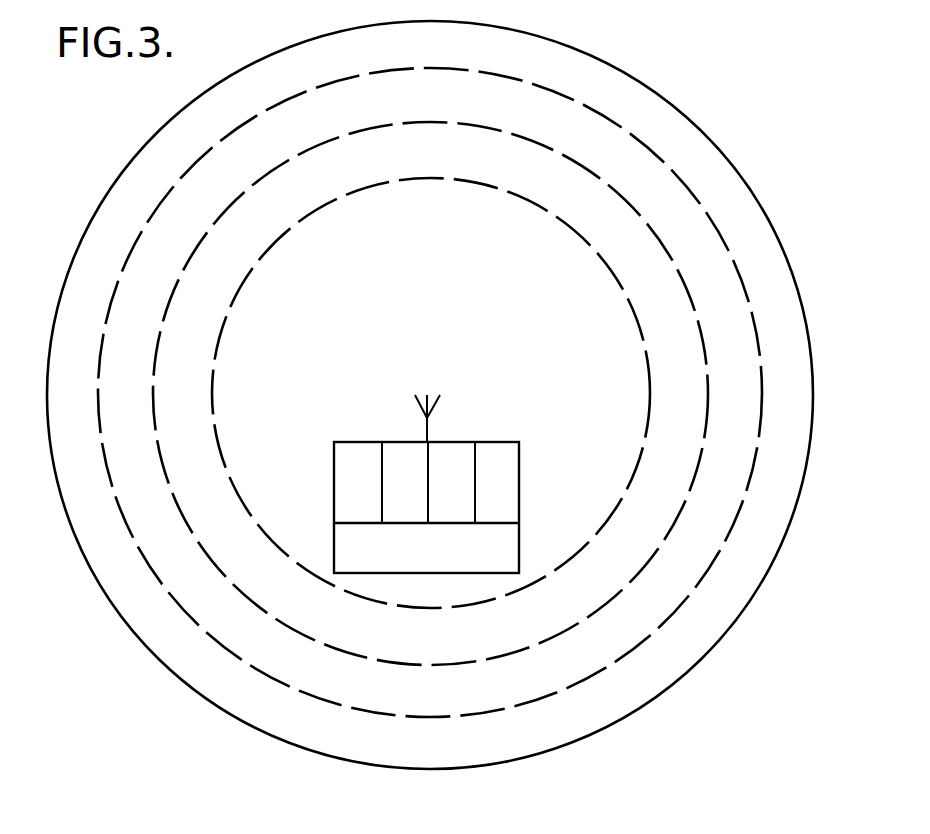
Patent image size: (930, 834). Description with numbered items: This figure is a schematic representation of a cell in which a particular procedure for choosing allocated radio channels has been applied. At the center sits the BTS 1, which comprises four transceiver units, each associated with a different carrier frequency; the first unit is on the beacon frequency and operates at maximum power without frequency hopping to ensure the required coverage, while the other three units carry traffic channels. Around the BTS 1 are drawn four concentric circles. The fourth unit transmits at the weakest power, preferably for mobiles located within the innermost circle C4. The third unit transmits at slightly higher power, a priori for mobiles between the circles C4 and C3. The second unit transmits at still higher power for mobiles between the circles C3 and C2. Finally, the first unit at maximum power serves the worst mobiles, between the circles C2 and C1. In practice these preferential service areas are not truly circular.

The BTS 1 is at (519, 524).
The circle C1 is at (650, 705).
The circle C2 is at (652, 637).
The circle C3 is at (633, 582).
The circle C4 is at (610, 518).